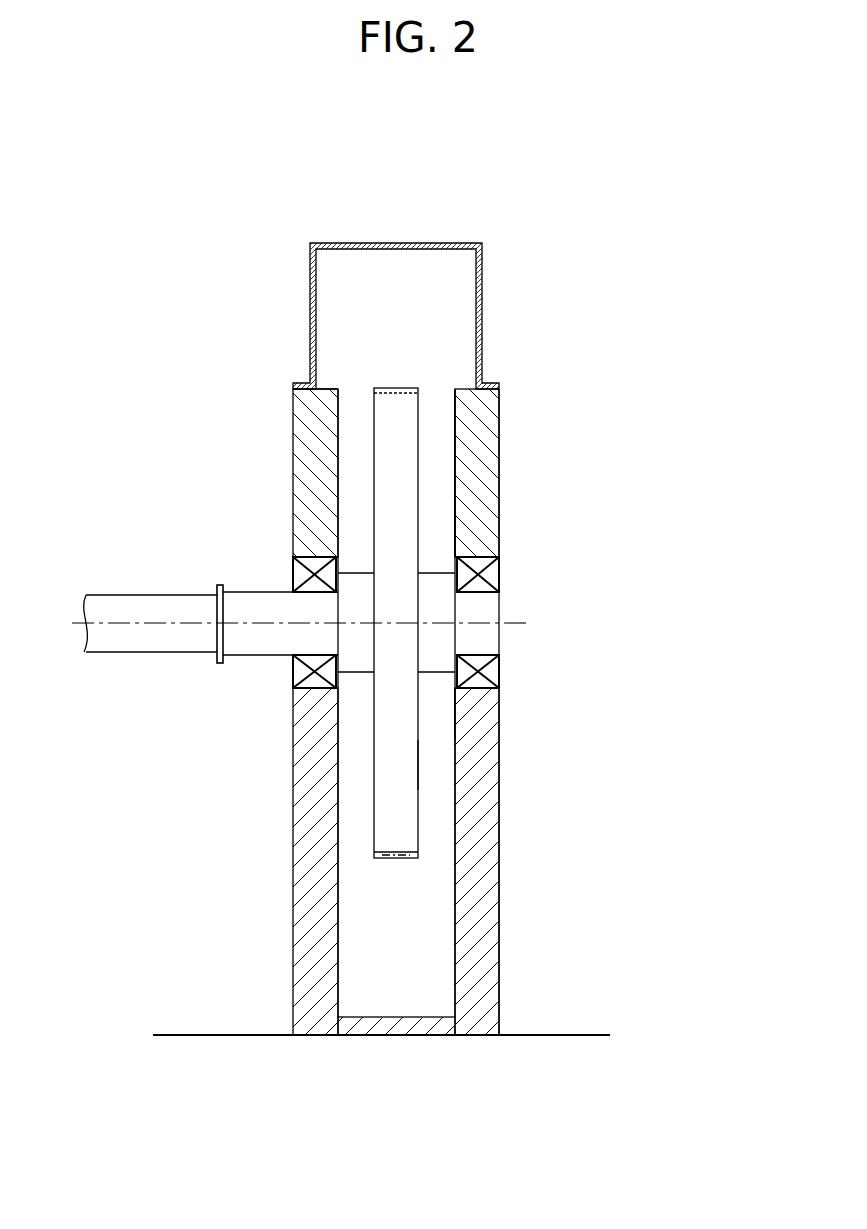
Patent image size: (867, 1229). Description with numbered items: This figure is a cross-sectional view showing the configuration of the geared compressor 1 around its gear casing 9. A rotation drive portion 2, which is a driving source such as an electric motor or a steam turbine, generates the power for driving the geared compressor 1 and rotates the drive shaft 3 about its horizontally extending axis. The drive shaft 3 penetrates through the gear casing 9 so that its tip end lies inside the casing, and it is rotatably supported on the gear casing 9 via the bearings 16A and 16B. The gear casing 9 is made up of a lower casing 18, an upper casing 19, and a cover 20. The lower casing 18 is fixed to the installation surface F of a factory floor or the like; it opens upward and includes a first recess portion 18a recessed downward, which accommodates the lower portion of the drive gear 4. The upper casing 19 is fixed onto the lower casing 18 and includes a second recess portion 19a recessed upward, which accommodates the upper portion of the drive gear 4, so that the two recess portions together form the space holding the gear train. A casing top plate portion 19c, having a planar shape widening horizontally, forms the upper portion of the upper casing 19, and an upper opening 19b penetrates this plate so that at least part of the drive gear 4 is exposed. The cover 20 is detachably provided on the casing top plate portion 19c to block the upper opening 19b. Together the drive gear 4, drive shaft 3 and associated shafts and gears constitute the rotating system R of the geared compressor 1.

The geared compressor 1 is at (372, 589).
The rotation drive portion 2 is at (130, 594).
The drive shaft 3 is at (262, 592).
The drive gear 4 is at (418, 483).
The gear casing 9 is at (512, 437).
The bearing 16A is at (290, 670).
The bearing 16B is at (500, 578).
The lower casing 18 is at (499, 866).
The first recess portion 18a is at (455, 691).
The upper casing 19 is at (293, 455).
The second recess portion 19a is at (455, 553).
The upper opening 19b is at (455, 415).
The casing top plate portion 19c is at (332, 390).
The cover 20 is at (446, 243).
The rotating system R is at (430, 766).
The installation surface F is at (577, 1035).